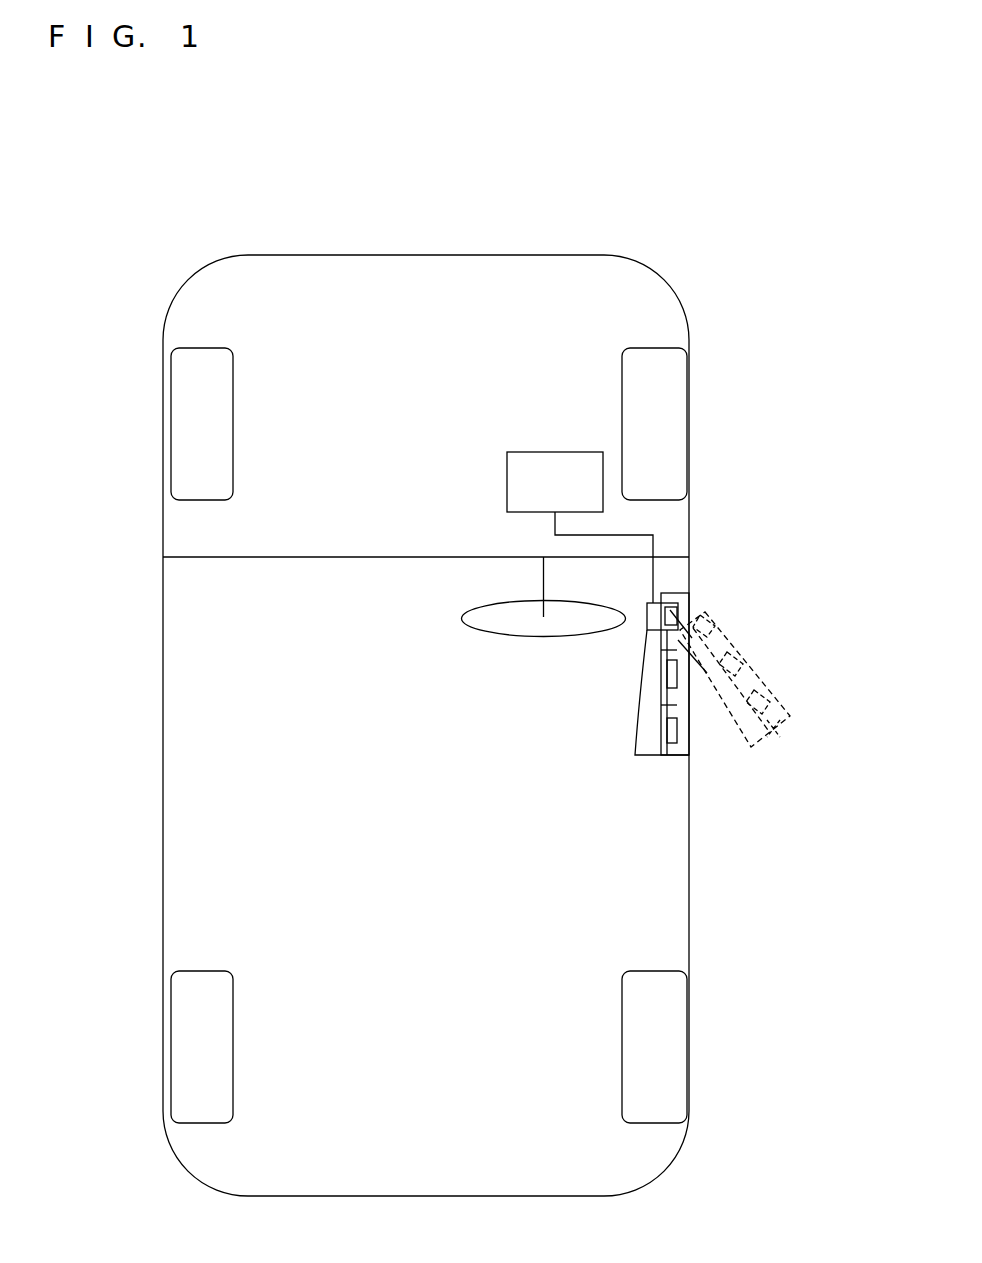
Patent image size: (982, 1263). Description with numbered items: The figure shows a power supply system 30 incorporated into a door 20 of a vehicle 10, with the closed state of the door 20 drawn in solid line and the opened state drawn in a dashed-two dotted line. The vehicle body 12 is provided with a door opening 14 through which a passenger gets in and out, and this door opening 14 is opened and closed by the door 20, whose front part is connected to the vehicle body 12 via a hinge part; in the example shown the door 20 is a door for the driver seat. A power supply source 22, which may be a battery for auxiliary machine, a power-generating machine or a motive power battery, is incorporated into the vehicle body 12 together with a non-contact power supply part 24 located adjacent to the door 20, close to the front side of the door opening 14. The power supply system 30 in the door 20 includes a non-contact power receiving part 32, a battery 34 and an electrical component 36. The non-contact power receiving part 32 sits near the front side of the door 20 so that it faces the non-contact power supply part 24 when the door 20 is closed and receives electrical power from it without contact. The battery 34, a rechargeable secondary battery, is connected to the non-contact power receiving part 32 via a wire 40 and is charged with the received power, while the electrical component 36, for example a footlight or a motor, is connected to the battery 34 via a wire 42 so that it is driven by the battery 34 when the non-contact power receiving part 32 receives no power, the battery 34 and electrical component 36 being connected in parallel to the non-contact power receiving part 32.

The vehicle 10 is at (662, 256).
The vehicle body 12 is at (691, 521).
The door opening 14 is at (691, 752).
The door 20 is at (682, 757).
The power supply source 22 is at (528, 452).
The non-contact power supply part 24 is at (648, 603).
The power supply system 30 is at (665, 758).
The non-contact power receiving part 32 is at (680, 590).
The battery 34 is at (662, 675).
The electrical component 36 is at (662, 737).
The wire 40 is at (660, 655).
The wire 42 is at (662, 705).